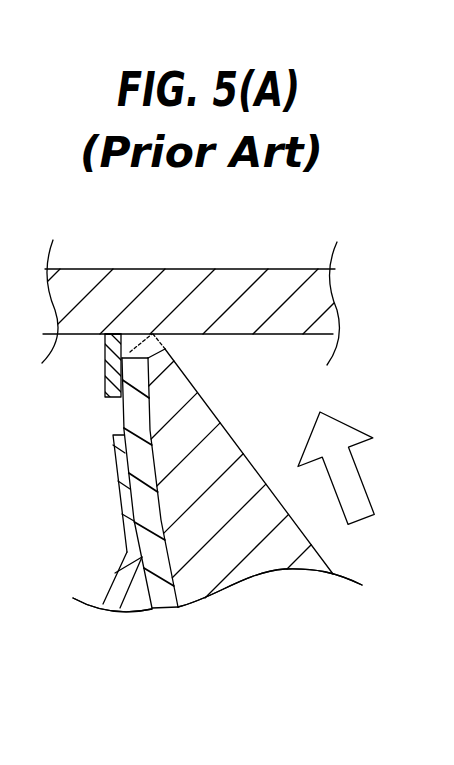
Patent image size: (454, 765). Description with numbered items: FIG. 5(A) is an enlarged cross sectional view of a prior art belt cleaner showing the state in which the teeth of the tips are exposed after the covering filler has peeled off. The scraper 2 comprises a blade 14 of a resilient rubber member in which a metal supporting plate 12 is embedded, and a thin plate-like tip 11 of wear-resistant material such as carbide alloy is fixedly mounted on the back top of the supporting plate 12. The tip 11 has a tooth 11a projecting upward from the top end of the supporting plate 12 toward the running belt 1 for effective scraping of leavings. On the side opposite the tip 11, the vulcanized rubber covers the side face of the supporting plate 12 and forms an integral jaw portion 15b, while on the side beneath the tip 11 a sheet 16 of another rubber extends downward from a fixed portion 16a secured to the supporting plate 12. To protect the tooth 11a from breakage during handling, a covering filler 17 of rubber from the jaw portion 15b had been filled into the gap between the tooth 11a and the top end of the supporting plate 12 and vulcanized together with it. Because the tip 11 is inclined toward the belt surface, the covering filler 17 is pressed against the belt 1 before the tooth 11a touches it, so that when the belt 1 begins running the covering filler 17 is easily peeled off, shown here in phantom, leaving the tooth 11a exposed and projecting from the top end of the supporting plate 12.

The belt 1 is at (202, 268).
The scraper 2 is at (209, 609).
The blade 14 is at (217, 590).
The tip 11 is at (107, 380).
The tooth 11a is at (104, 344).
The supporting plate 12 is at (139, 537).
The jaw portion 15b is at (219, 415).
The sheet 16 is at (112, 582).
The fixed portion 16a is at (117, 467).
The covering filler 17 is at (167, 348).